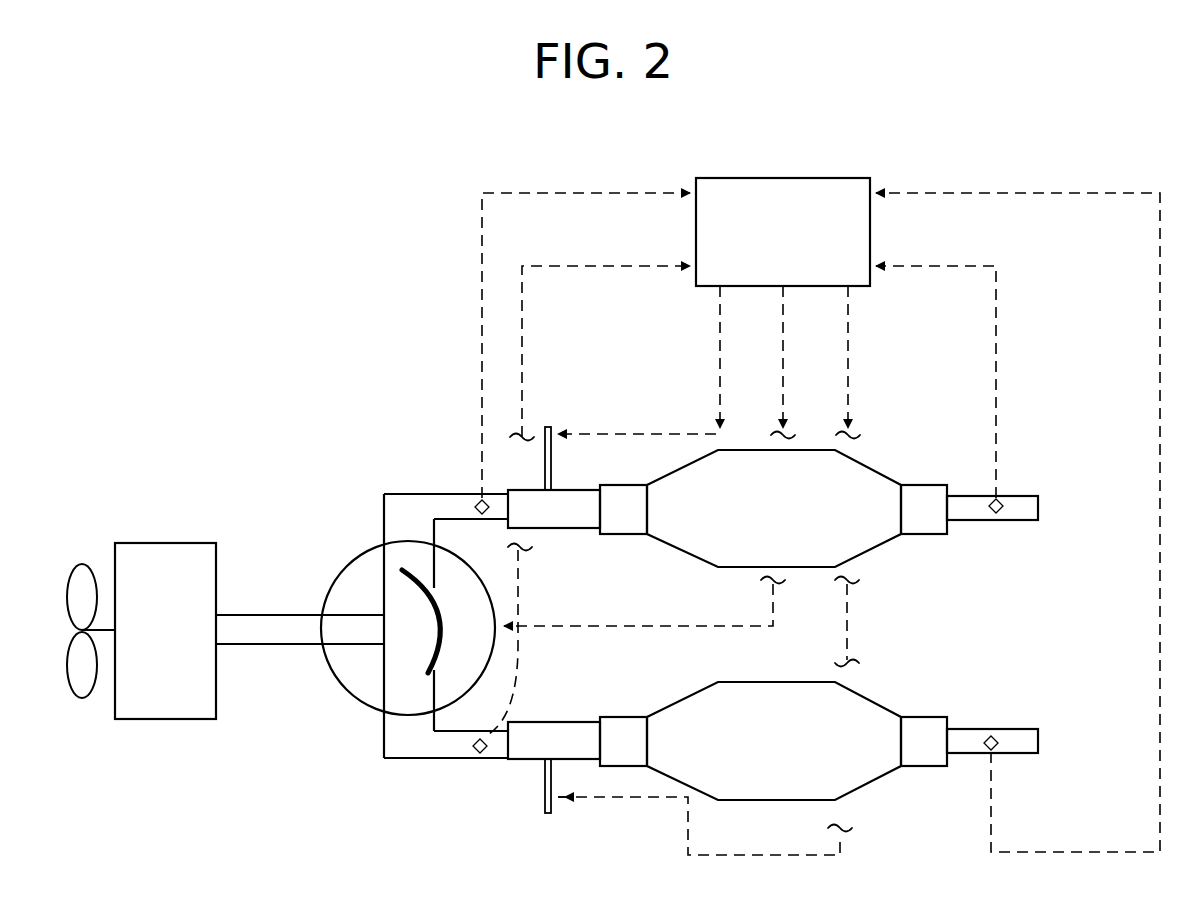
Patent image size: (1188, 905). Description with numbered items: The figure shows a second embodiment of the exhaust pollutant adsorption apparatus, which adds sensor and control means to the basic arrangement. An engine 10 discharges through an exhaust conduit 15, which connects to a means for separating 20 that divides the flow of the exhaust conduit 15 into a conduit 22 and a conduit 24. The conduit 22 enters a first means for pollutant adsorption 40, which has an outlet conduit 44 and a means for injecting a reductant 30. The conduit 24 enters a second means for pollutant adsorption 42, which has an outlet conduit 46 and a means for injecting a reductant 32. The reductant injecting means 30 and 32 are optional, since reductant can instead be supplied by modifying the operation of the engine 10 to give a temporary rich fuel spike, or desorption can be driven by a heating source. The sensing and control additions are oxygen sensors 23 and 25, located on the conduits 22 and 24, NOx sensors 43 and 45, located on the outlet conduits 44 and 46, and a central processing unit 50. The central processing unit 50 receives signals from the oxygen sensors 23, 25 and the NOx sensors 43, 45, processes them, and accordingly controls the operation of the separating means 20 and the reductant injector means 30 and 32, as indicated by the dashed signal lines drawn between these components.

The engine 10 is at (130, 553).
The exhaust conduit 15 is at (267, 634).
The means for separating 20 is at (362, 578).
The conduit 22 is at (424, 746).
The oxygen sensor 23 is at (484, 752).
The conduit 24 is at (421, 512).
The oxygen sensor 25 is at (488, 516).
The means for injecting a reductant 30 is at (553, 810).
The means for injecting a reductant 32 is at (553, 486).
The first means for pollutant adsorption 40 is at (858, 727).
The second means for pollutant adsorption 42 is at (852, 482).
The NOx sensor 43 is at (996, 748).
The outlet conduit 44 is at (1019, 737).
The NOx sensor 45 is at (1001, 509).
The outlet conduit 46 is at (1015, 502).
The central processing unit (CPU) 50 is at (808, 190).